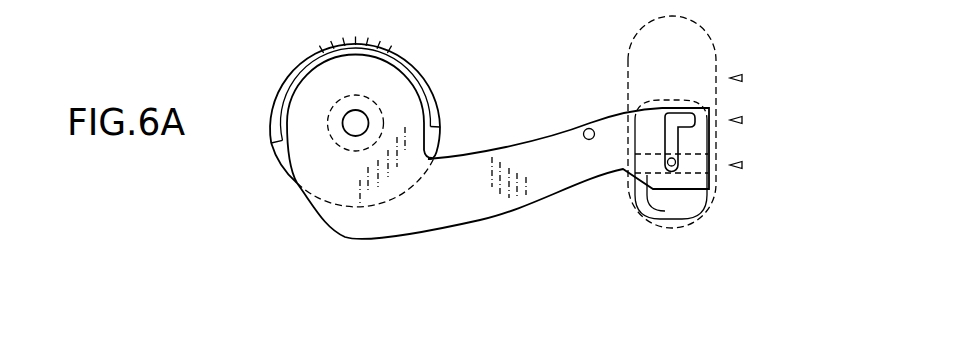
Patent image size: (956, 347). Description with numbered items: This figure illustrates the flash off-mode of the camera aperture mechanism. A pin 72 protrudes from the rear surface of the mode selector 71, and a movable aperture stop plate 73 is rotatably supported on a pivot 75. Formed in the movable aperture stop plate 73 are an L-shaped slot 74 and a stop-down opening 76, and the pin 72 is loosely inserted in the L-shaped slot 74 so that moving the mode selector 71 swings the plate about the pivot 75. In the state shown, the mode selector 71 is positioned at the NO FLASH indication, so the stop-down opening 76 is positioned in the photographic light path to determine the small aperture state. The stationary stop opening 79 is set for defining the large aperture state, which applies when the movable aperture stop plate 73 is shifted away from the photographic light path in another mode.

The mode selector 71 is at (692, 163).
The pin 72 is at (665, 168).
The movable aperture stop plate 73 is at (458, 213).
The L-shaped slot 74 is at (690, 137).
The pivot 75 is at (586, 128).
The stop-down opening 76 is at (343, 133).
The stationary stop opening 79 is at (366, 97).